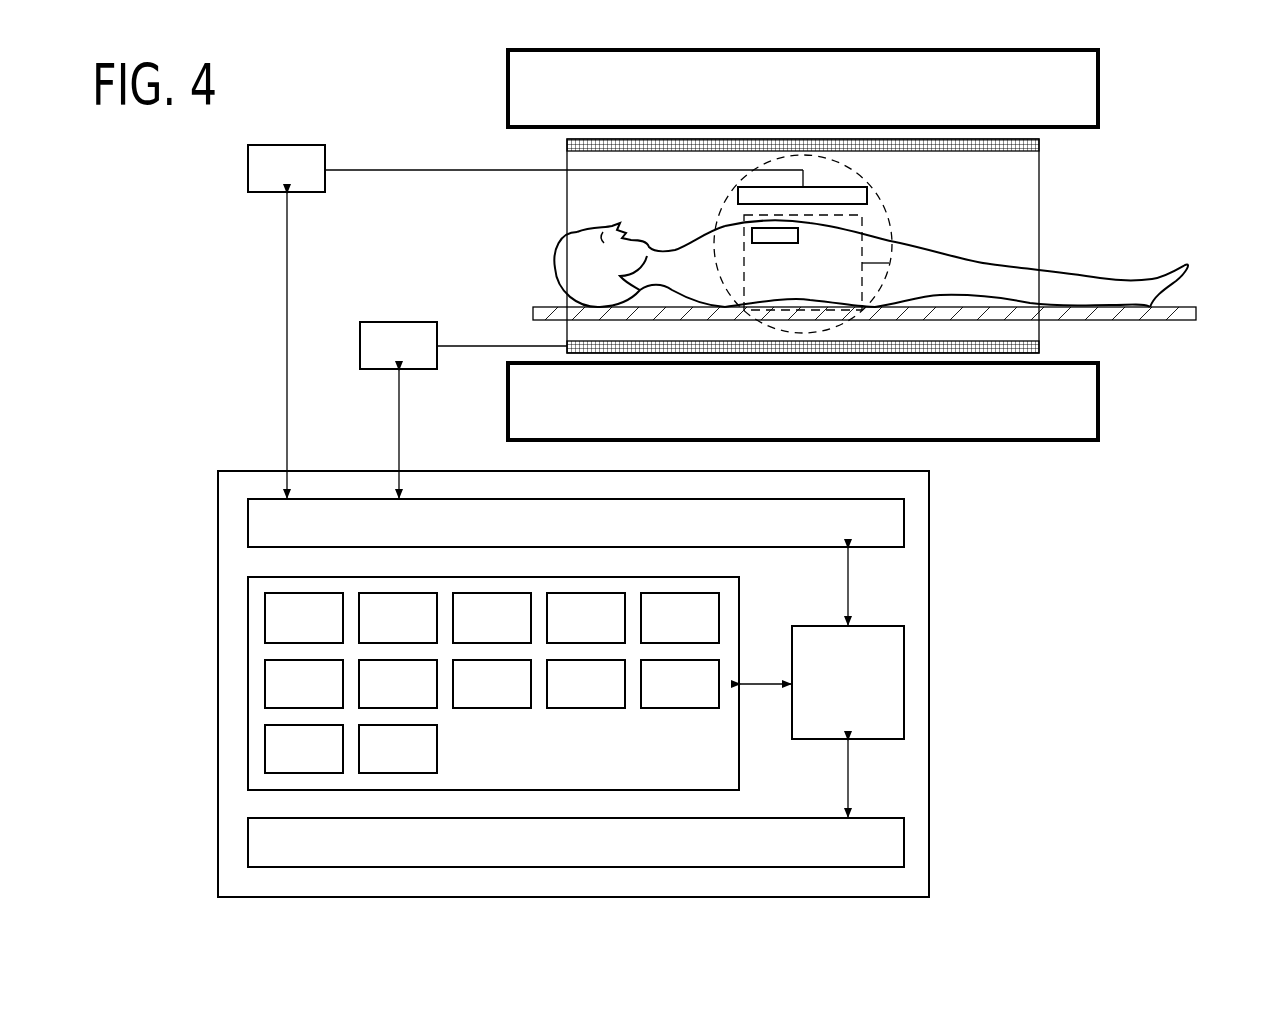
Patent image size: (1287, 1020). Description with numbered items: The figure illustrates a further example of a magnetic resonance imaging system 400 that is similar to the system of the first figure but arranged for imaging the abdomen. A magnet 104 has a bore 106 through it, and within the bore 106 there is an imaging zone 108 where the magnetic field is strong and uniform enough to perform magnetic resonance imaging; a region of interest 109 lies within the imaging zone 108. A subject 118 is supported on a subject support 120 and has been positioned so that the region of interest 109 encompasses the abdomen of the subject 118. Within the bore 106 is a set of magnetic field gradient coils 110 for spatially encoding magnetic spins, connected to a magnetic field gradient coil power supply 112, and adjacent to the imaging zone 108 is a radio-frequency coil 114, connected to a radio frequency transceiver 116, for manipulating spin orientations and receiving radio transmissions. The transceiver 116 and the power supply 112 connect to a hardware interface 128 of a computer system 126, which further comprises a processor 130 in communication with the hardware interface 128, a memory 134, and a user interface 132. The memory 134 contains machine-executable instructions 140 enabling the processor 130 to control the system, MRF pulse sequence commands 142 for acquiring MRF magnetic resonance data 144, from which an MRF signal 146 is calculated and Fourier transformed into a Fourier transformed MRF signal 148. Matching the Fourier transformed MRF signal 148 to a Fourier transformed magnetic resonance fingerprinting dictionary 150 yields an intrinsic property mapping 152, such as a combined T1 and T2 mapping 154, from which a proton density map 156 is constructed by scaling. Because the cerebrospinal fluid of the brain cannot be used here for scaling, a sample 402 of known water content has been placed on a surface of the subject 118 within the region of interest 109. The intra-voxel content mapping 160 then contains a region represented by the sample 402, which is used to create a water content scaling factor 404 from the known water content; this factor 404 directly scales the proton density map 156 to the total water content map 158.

The magnetic resonance imaging system 400 is at (1122, 83).
The magnet 104 is at (1098, 110).
The bore 106 is at (1052, 187).
The imaging zone 108 is at (884, 204).
The region of interest 109 is at (880, 243).
The magnetic field gradient coils 110 is at (655, 354).
The magnetic field gradient coil power supply 112 is at (378, 359).
The radio-frequency coil 114 is at (738, 195).
The radio frequency transceiver 116 is at (266, 183).
The subject 118 is at (1112, 288).
The subject support 120 is at (1123, 313).
The computer system 126 is at (929, 633).
The hardware interface 128 is at (555, 536).
The processor 130 is at (827, 695).
The user interface 132 is at (555, 855).
The memory 134 is at (248, 628).
The machine-executable instructions 140 is at (283, 632).
The MRF pulse sequence commands 142 is at (377, 632).
The MRF magnetic resonance data 144 is at (471, 632).
The MRF signal 146 is at (565, 632).
The Fourier transformed MRF signal 148 is at (659, 632).
The Fourier transformed magnetic resonance fingerprinting dictionary 150 is at (283, 698).
The intrinsic property mapping 152 is at (377, 698).
The combined T1 and T2 mapping 154 is at (471, 698).
The proton density map 156 is at (565, 698).
The total water content map 158 is at (659, 698).
The intra-voxel content mapping 160 is at (283, 763).
The sample 402 is at (762, 237).
The water content scaling factor 404 is at (377, 763).